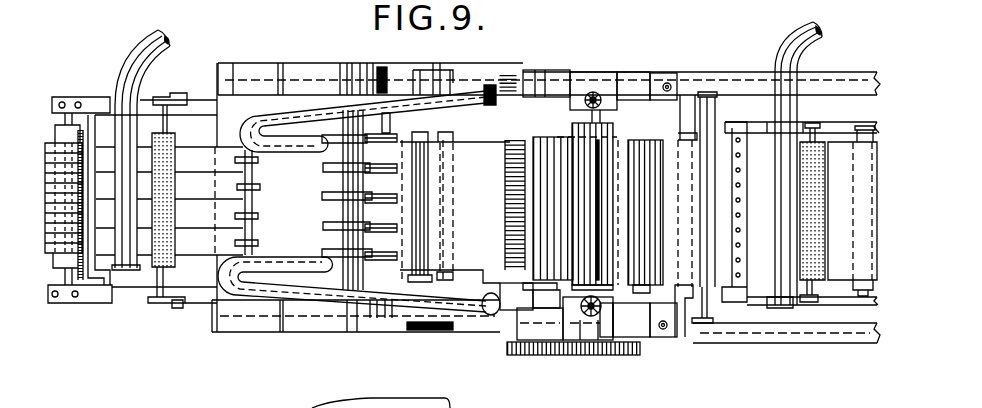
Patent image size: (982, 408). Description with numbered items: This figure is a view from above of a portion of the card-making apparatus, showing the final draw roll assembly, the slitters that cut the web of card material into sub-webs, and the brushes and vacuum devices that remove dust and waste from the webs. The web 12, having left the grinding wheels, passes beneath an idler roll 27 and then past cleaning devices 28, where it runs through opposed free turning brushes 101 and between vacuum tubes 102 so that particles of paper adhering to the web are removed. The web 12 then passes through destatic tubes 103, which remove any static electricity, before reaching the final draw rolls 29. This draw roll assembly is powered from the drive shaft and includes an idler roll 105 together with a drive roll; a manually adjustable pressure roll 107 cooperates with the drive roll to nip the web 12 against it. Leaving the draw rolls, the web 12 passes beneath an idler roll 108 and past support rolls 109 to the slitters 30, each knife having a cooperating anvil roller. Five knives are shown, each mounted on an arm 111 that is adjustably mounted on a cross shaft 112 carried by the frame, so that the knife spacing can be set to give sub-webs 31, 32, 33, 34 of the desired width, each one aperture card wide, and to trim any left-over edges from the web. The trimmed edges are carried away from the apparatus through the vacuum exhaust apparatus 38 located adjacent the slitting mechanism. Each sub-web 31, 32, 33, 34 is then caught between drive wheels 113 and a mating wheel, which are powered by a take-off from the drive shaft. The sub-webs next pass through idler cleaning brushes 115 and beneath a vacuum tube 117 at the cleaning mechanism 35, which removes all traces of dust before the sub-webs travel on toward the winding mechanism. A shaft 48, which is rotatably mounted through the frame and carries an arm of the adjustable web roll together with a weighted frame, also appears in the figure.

The web 12 is at (858, 211).
The idler roll 27 is at (850, 291).
The cleaning devices 28 is at (763, 301).
The final draw rolls 29 is at (628, 76).
The slitters 30 is at (450, 206).
The sub-web 31 is at (219, 241).
The sub-web 32 is at (219, 216).
The sub-web 33 is at (219, 186).
The sub-web 34 is at (219, 160).
The cleaning mechanism 35 is at (146, 326).
The vacuum exhaust apparatus 38 is at (480, 90).
The shaft 48 is at (95, 117).
The free turning brushes 101 is at (827, 153).
The vacuum tubes 102 is at (817, 38).
The destatic tubes 103 is at (747, 160).
The idler roll 105 is at (638, 160).
The pressure roll 107 is at (590, 157).
The idler roll 108 is at (543, 157).
The support rolls 109 is at (455, 141).
The arm 111 is at (267, 197).
The cross shaft 112 is at (347, 157).
The drive wheels 113 is at (261, 212).
The idler cleaning brushes 115 is at (175, 133).
The vacuum tube 117 is at (147, 62).